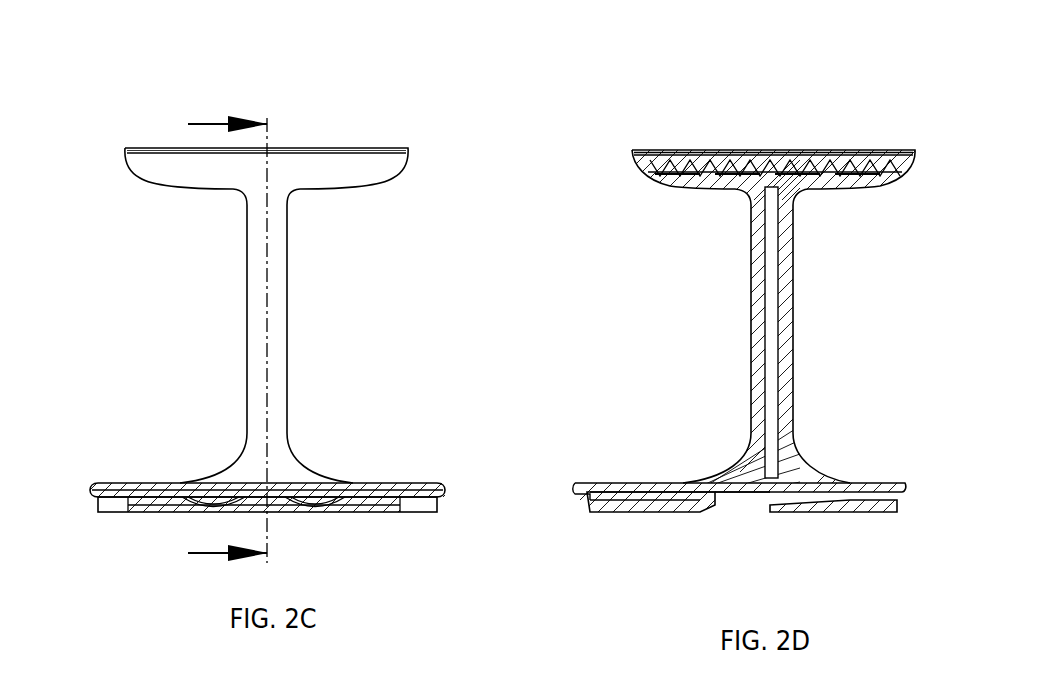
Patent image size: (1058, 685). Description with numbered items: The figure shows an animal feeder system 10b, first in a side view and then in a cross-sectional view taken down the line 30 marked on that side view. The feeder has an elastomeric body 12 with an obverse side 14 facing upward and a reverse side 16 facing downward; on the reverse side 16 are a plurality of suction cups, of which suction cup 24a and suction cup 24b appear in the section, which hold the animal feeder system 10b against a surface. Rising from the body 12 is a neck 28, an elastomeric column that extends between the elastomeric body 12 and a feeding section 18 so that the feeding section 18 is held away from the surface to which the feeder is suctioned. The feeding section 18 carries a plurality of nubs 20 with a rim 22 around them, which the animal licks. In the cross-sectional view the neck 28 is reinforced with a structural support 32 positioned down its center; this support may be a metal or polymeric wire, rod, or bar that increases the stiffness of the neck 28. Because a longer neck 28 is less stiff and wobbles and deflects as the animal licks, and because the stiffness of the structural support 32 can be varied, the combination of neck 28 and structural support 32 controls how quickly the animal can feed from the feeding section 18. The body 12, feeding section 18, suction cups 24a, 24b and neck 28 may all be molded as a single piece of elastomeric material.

In FIG. 2C, the animal feeder system 10b is at (100, 83).
In FIG. 2D, the animal feeder system 10b is at (588, 92).
In FIG. 2C, the elastomeric body 12 is at (375, 453).
In FIG. 2D, the elastomeric body 12 is at (862, 460).
In FIG. 2D, the obverse side 14 is at (678, 483).
In FIG. 2D, the reverse side 16 is at (740, 492).
In FIG. 2C, the feeding section 18 is at (407, 203).
In FIG. 2D, the feeding section 18 is at (912, 203).
In FIG. 2D, the nubs 20 is at (752, 153).
In FIG. 2C, the rim 22 is at (130, 173).
In FIG. 2D, the rim 22 is at (633, 158).
In FIG. 2D, the suction cup 24a is at (647, 510).
In FIG. 2D, the suction cup 24b is at (857, 510).
In FIG. 2C, the neck 28 is at (310, 323).
In FIG. 2D, the neck 28 is at (722, 281).
In FIG. 2C, the line 30 is at (268, 131).
In FIG. 2D, the structural support 32 is at (778, 333).